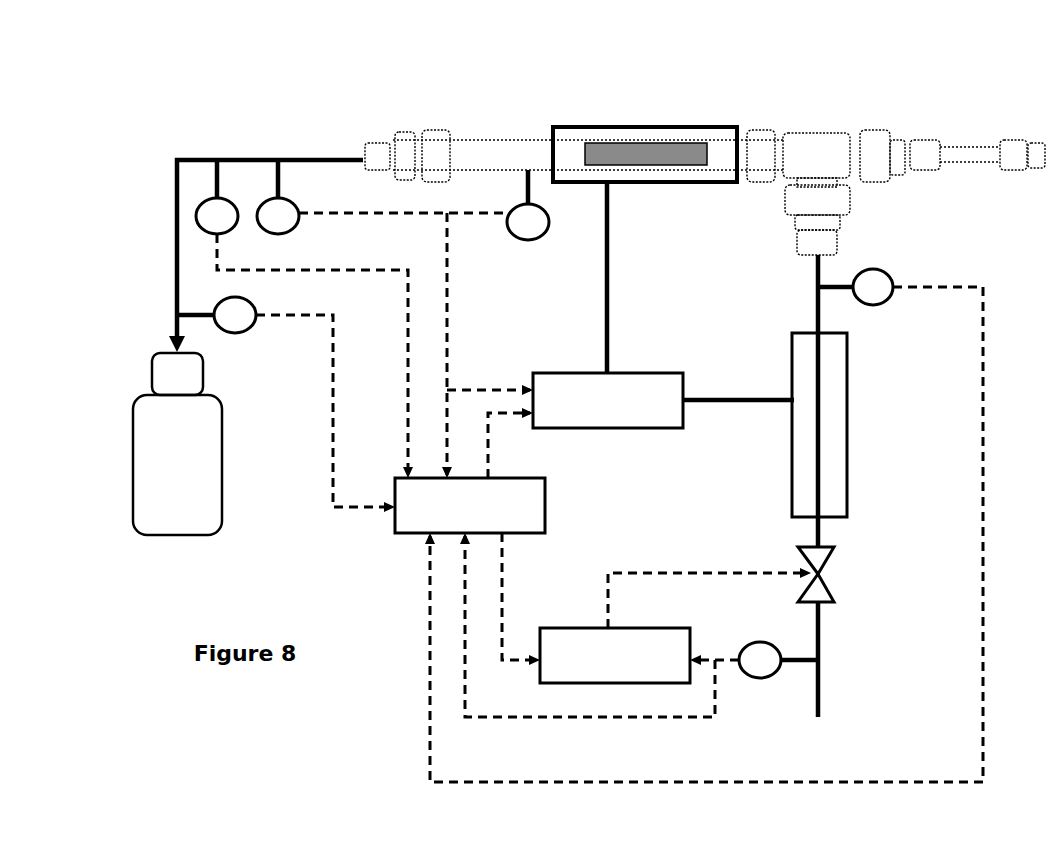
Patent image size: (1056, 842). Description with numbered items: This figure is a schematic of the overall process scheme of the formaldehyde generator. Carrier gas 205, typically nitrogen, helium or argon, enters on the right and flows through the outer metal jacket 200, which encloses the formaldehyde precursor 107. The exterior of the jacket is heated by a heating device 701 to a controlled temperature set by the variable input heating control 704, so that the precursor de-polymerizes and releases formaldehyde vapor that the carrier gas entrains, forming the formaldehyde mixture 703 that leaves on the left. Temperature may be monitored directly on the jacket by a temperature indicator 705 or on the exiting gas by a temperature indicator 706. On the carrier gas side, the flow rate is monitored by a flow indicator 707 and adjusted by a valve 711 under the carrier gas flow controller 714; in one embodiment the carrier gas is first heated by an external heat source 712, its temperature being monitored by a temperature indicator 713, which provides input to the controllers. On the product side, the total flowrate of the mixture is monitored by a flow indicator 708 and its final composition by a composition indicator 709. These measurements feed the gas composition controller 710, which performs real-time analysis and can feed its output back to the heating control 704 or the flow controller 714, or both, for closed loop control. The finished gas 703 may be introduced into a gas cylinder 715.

The outer metal jacket 200 is at (522, 132).
The formaldehyde precursor 107 is at (679, 150).
The heating device 701 is at (645, 137).
The formaldehyde mixture 703 is at (266, 241).
The variable input heating control 704 is at (663, 305).
The temperature indicator 705 is at (528, 225).
The temperature indicator 706 is at (395, 327).
The flow indicator 707 is at (639, 625).
The flow indicator 708 is at (304, 338).
The composition indicator 709 is at (304, 404).
The gas composition controller 710 is at (470, 536).
The valve 711 is at (749, 587).
The external heat source 712 is at (845, 401).
The temperature indicator 713 is at (704, 525).
The carrier gas flow controller 714 is at (615, 655).
The gas cylinder 715 is at (177, 473).
The carrier gas 205 is at (818, 676).